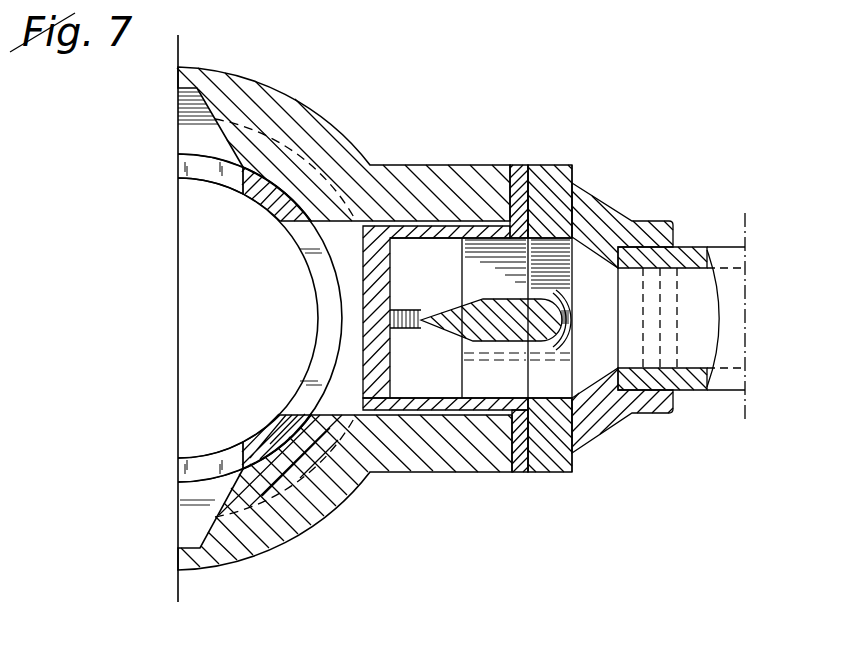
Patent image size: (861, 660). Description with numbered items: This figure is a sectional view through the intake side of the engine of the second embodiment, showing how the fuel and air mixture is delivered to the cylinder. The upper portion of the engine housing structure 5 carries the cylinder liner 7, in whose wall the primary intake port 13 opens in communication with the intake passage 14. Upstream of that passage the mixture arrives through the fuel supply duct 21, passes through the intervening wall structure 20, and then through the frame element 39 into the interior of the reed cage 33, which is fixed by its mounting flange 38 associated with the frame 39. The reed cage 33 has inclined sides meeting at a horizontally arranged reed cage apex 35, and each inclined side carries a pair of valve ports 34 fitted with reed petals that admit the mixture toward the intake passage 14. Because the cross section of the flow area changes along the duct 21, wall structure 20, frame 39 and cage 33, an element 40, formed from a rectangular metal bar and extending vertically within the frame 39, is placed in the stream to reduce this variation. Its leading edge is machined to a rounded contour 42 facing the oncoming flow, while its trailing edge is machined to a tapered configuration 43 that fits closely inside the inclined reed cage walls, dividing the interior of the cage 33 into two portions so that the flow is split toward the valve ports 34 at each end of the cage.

The upper portion of the engine housing structure 5 is at (310, 124).
The cylinder liner 7 is at (273, 206).
The primary intake port 13 is at (290, 236).
The intake passage 14 is at (348, 400).
The wall structure 20 is at (642, 230).
The fuel supply duct 21 is at (742, 292).
The reed cage 33 is at (456, 414).
The valve ports 34 is at (390, 268).
The reed cage apex 35 is at (366, 314).
The mounting flange 38 is at (521, 164).
The frame element 39 is at (573, 165).
The element 40 is at (600, 284).
The rounded contour of leading edge 42 is at (569, 322).
The tapered configuration of trailing edge 43 is at (446, 311).